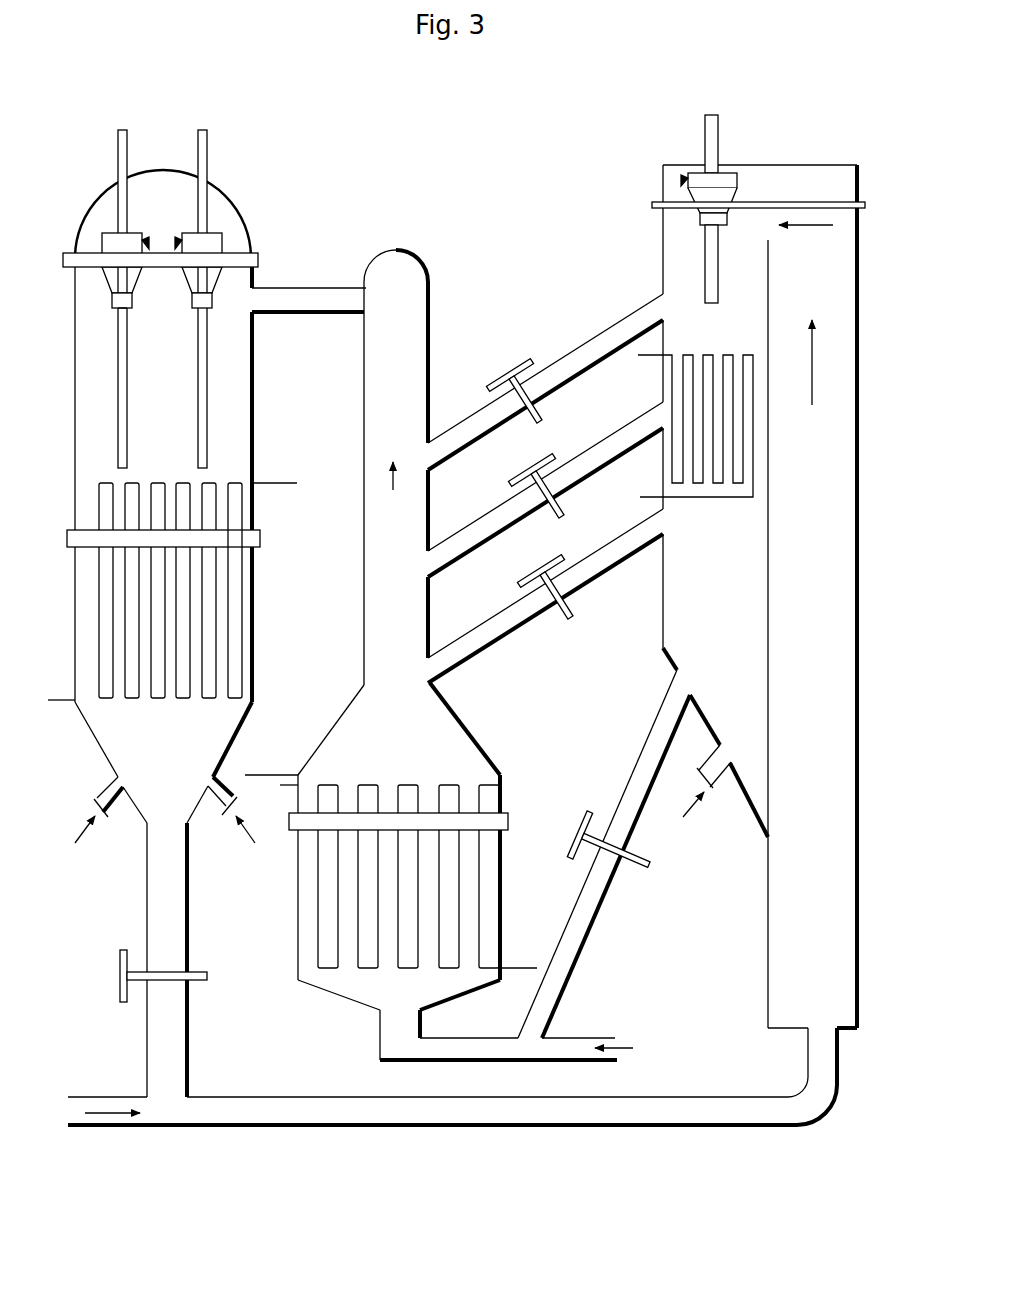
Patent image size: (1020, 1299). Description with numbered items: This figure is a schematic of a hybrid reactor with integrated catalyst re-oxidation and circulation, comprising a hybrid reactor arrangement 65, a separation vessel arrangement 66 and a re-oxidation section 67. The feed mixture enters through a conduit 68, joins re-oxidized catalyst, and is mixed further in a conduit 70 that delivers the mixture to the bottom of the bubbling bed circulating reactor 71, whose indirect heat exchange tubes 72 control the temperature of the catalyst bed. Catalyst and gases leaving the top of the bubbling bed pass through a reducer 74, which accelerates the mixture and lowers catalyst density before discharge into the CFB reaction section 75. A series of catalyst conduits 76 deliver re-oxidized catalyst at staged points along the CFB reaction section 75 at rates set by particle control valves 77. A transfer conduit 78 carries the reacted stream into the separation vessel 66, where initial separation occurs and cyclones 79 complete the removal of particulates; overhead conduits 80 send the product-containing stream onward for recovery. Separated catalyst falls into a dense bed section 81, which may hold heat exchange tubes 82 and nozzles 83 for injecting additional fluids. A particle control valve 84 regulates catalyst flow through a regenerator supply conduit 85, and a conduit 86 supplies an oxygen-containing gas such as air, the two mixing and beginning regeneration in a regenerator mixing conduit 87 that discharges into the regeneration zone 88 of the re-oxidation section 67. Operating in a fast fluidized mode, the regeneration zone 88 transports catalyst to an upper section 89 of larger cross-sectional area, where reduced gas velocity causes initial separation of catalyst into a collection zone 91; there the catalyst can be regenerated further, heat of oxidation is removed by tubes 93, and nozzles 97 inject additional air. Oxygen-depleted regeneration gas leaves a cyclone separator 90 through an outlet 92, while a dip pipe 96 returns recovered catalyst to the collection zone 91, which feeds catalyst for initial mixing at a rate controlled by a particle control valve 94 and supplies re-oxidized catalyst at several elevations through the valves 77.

The hybrid reactor arrangement 65 is at (322, 731).
The separation vessel arrangement 66 is at (258, 418).
The re-oxidation section 67 is at (859, 556).
The conduit 68 is at (603, 1038).
The conduit 70 is at (446, 1062).
The bubbling bed circulating reactor 71 is at (300, 896).
The tubes 72 is at (482, 852).
The reducer 74 is at (481, 746).
The CFB reaction section 75 is at (362, 468).
The catalyst conduits 76 is at (452, 430).
The particle control valves 77 is at (520, 367).
The transfer conduit 78 is at (302, 288).
The cyclones 79 is at (224, 243).
The overhead conduits 80 is at (197, 138).
The dense bed section 81 is at (88, 572).
The tubes 82 is at (240, 606).
The nozzles 83 is at (104, 790).
The particle control valve 84 is at (120, 976).
The regenerator supply conduit 85 is at (145, 926).
The conduit 86 is at (97, 1121).
The regenerator mixing conduit 87 is at (362, 1122).
The regeneration zone 88 is at (846, 716).
The upper section 89 is at (842, 246).
The cyclone separator 90 is at (680, 195).
The collection zone 91 is at (700, 590).
The outlet 92 is at (718, 128).
The tubes 93 is at (675, 460).
The particle control valve 94 is at (652, 857).
The dip pipe 96 is at (705, 268).
The nozzles 97 is at (718, 790).